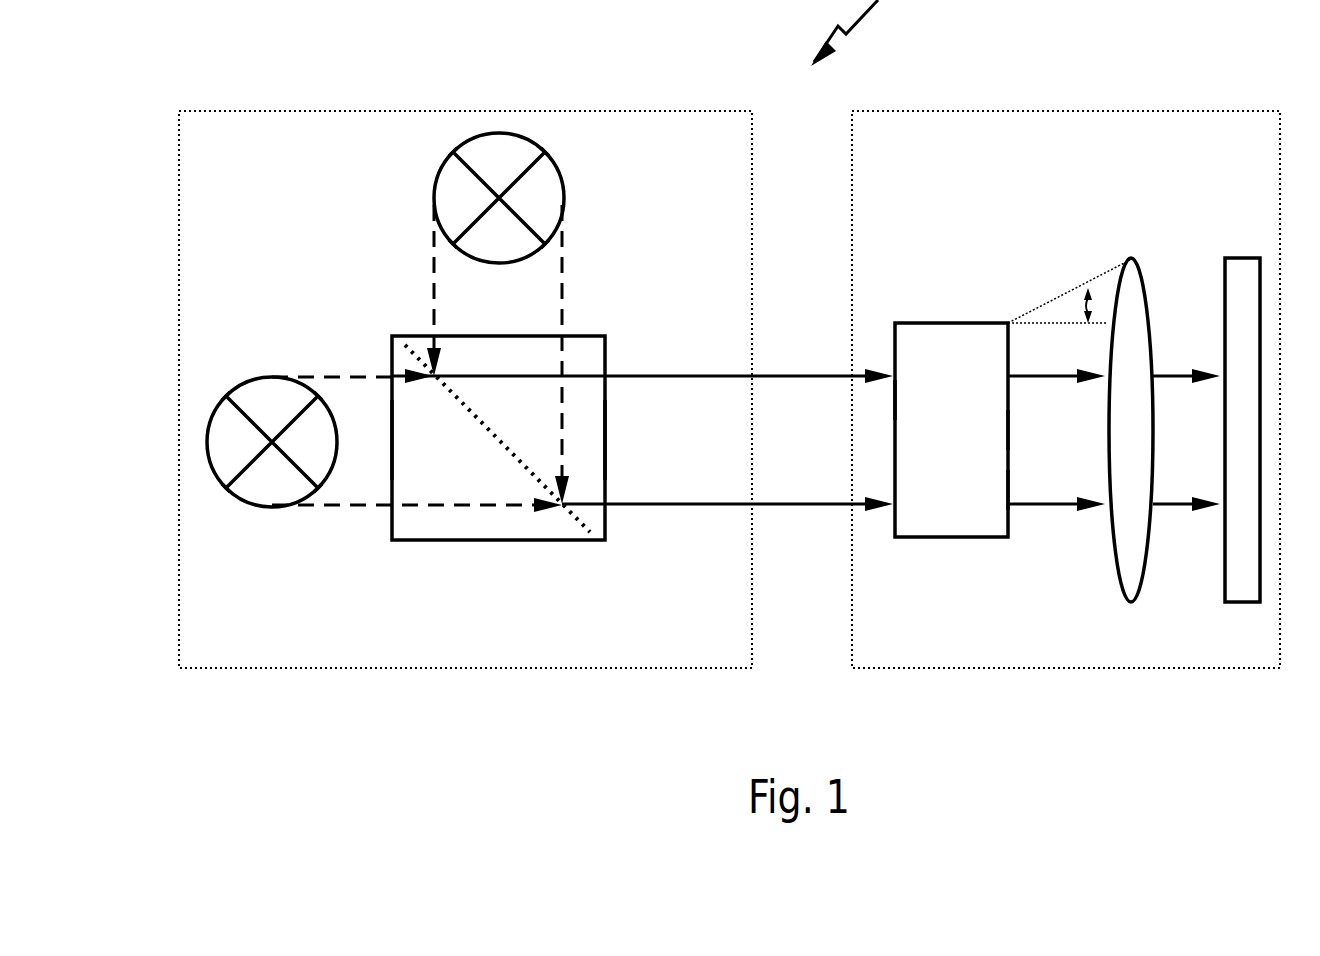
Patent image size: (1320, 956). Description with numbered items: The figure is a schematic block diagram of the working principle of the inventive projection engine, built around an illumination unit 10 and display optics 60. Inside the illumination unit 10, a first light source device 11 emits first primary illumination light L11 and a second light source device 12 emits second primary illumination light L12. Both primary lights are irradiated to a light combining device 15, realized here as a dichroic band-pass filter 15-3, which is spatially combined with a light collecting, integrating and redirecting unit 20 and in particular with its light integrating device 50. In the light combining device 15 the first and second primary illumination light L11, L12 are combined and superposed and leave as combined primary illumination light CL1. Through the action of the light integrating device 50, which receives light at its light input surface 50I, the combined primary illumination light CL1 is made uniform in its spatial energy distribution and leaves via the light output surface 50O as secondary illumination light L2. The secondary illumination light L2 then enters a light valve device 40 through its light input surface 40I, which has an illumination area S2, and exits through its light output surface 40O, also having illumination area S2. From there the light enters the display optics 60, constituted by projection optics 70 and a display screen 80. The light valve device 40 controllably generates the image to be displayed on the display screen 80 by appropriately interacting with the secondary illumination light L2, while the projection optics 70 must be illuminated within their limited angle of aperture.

The illumination unit 10 is at (465, 335).
The first light source device 11 is at (272, 397).
The second light source device 12 is at (499, 152).
The light combining device 15 is at (531, 478).
The light collecting, integrating and redirecting unit 20 is at (531, 478).
The light integrating device 50 is at (531, 478).
The dichroic band-pass filter 15-3 is at (578, 515).
The light input surface 50I is at (438, 445).
The light output surface 50O is at (657, 440).
The first primary illumination light L11 is at (417, 399).
The second primary illumination light L12 is at (551, 354).
The combined primary illumination light CL1 is at (642, 400).
The secondary illumination light L2 is at (999, 400).
The display optics 60 is at (1066, 335).
The light valve device 40 is at (995, 387).
The light input surface 40I is at (946, 391).
The light output surface 40O is at (956, 484).
The illumination area S2 is at (1051, 420).
The projection optics 70 is at (1144, 384).
The display screen 80 is at (1260, 384).